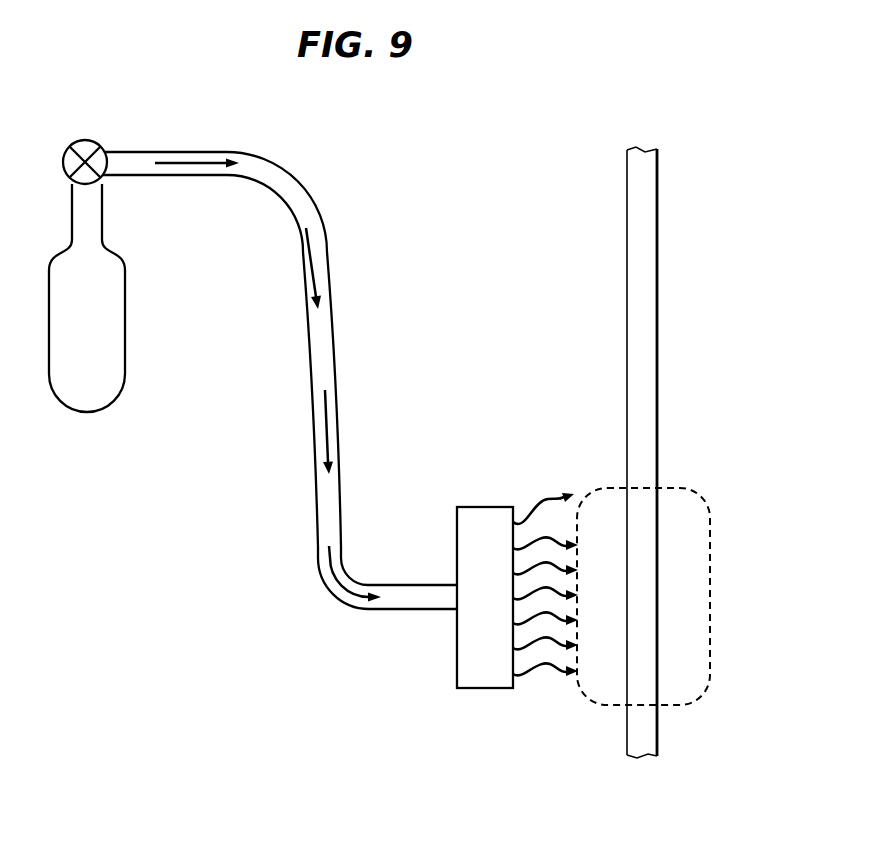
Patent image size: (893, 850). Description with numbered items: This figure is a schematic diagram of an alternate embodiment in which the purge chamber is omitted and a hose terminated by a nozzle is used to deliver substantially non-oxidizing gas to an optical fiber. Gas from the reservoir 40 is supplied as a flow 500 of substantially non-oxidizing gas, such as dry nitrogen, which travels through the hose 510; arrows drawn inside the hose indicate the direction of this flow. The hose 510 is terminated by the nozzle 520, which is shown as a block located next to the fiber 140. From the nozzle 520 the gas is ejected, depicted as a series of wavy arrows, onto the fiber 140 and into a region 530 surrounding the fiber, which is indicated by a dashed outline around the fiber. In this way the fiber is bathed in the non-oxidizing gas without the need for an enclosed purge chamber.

The reservoir 40 is at (127, 343).
The fiber 140 is at (658, 208).
The flow of substantially non-oxidizing gas 500 is at (318, 256).
The hose 510 is at (338, 357).
The nozzle 520 is at (457, 643).
The region surrounding the fiber 530 is at (711, 570).